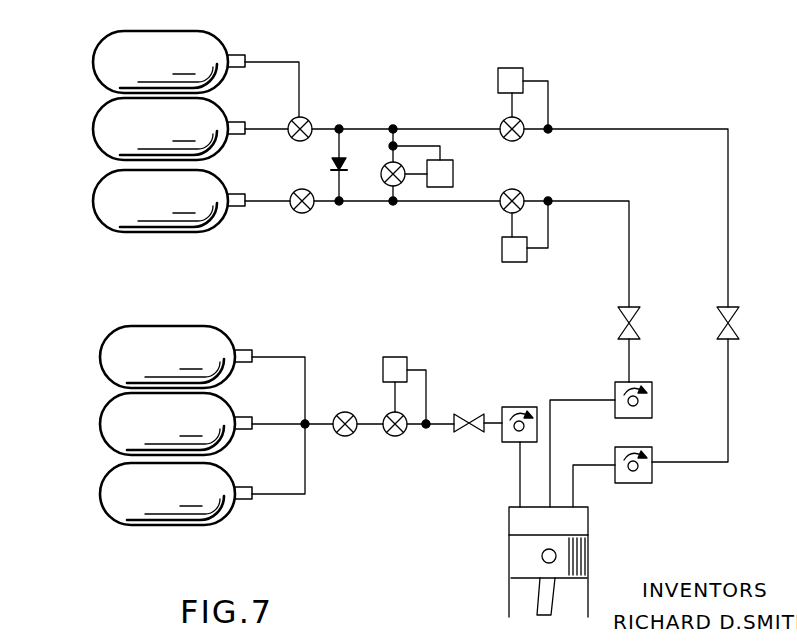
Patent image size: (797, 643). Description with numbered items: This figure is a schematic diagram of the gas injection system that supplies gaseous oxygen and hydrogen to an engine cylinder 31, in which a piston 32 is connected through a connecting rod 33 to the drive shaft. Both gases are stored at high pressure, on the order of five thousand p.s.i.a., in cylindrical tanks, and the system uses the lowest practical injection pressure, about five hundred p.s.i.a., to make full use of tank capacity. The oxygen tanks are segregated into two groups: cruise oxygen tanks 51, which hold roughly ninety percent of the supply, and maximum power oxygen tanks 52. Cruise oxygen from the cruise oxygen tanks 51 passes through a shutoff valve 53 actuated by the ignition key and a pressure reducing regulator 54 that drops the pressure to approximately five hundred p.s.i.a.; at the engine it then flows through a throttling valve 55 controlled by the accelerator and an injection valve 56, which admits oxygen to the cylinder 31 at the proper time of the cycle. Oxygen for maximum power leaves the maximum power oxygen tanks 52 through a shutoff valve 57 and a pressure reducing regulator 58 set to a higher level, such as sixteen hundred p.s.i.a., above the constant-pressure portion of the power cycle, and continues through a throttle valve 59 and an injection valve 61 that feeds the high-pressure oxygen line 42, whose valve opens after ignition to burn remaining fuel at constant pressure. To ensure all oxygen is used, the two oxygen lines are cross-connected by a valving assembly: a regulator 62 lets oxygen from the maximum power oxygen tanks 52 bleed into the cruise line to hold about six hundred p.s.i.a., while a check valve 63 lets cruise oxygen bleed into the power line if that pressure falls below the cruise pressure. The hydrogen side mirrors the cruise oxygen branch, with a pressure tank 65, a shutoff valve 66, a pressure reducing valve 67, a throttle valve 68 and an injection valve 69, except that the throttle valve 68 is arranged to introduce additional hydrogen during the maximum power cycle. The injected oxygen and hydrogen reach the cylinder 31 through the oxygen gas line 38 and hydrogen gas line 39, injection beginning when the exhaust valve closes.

The engine cylinder 31 is at (507, 524).
The piston 32 is at (507, 566).
The connecting rod 33 is at (507, 604).
The oxygen gas line 38 is at (555, 466).
The hydrogen gas line 39 is at (516, 497).
The high-pressure oxygen line 42 is at (575, 485).
The cruise oxygen tanks 51 is at (86, 105).
The maximum power oxygen tanks 52 is at (96, 201).
The shutoff valve 53 is at (309, 120).
The pressure reducing regulator 54 is at (520, 68).
The throttling valve 55 is at (737, 333).
The injection valve 56 is at (652, 484).
The shutoff valve 57 is at (295, 211).
The pressure reducing regulator 58 is at (512, 262).
The throttle valve 59 is at (621, 331).
The injection valve 61 is at (655, 401).
The regulator 62 is at (408, 188).
The check valve 63 is at (344, 174).
The hydrogen pressure tank 65 is at (80, 434).
The shutoff valve 66 is at (344, 441).
The pressure reducing valve 67 is at (400, 357).
The throttle valve 68 is at (463, 416).
The injection valve 69 is at (504, 441).